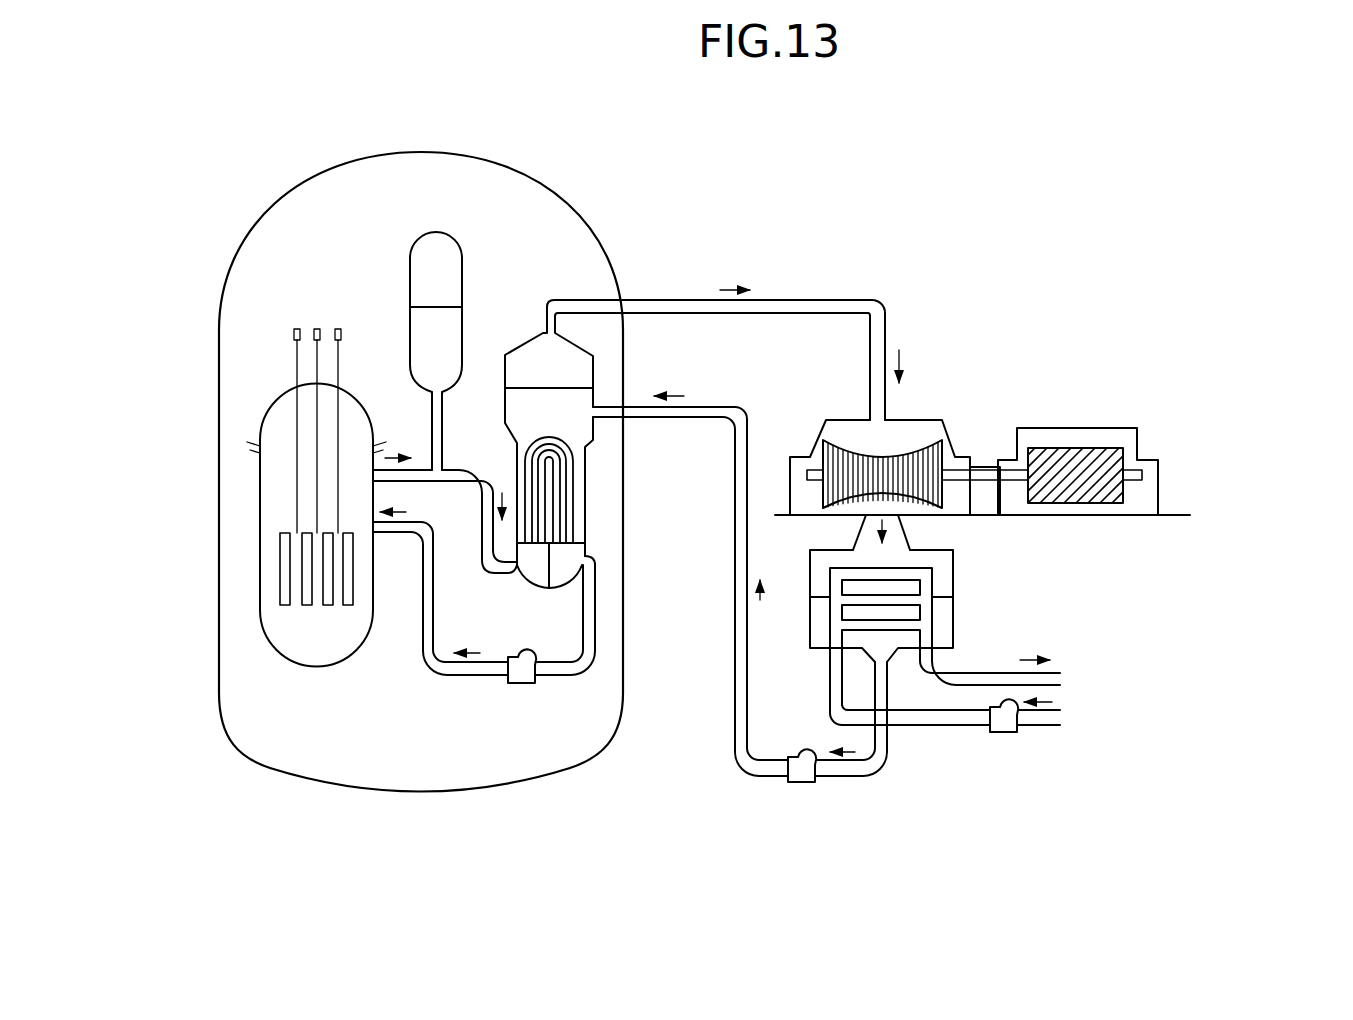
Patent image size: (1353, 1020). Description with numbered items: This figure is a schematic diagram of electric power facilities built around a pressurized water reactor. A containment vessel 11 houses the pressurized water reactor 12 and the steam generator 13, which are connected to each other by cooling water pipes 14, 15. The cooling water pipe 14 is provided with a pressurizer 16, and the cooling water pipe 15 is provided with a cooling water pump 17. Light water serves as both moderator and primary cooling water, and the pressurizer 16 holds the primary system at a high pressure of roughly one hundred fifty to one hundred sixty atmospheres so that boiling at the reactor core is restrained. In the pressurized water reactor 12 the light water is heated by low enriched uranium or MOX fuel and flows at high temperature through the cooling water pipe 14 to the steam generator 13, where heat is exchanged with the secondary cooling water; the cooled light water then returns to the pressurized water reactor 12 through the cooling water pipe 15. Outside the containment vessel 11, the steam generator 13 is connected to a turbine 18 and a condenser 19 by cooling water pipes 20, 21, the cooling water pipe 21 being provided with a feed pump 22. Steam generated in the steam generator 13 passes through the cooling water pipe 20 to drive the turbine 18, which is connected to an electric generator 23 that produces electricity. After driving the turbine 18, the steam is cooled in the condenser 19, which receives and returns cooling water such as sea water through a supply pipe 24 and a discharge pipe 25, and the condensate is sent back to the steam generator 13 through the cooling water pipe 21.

The containment vessel 11 is at (318, 173).
The pressurized water reactor 12 is at (266, 407).
The steam generator 13 is at (525, 336).
The cooling water pipe 14 is at (468, 467).
The cooling water pipe 15 is at (450, 677).
The pressurizer 16 is at (410, 264).
The cooling water pump 17 is at (521, 686).
The turbine 18 is at (956, 415).
The condenser 19 is at (966, 579).
The cooling water pipe 20 is at (870, 297).
The cooling water pipe 21 is at (733, 750).
The feed pump 22 is at (799, 784).
The electric generator 23 is at (1154, 427).
The supply pipe 24 is at (930, 728).
The discharge pipe 25 is at (975, 672).